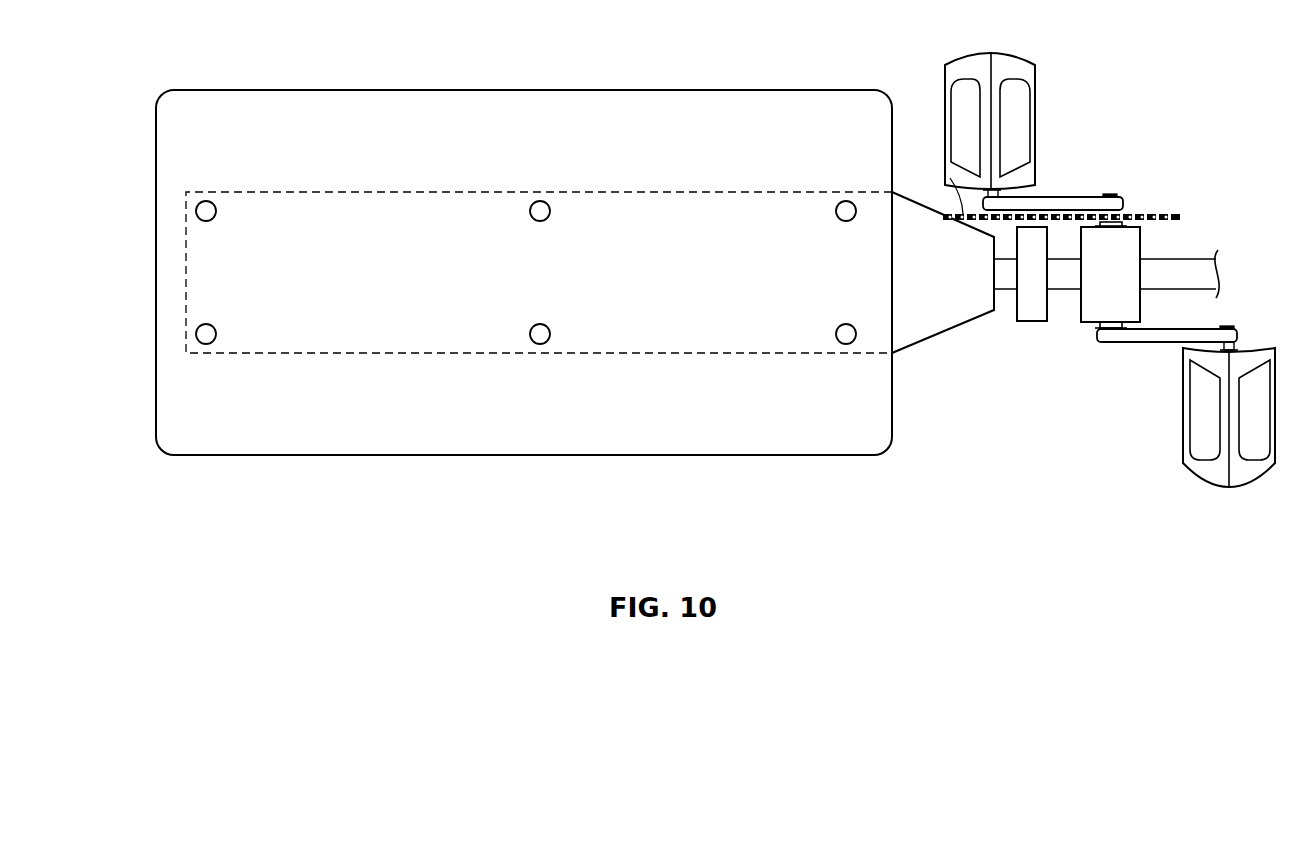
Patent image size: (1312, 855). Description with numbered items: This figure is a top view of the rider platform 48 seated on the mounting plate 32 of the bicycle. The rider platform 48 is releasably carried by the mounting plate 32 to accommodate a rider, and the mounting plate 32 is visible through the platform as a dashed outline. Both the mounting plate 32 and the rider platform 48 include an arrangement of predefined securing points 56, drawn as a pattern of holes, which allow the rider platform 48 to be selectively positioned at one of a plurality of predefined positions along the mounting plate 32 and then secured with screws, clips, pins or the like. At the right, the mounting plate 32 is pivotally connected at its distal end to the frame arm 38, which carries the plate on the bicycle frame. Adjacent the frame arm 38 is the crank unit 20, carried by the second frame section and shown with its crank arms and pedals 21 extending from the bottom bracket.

The rider platform 48 is at (627, 115).
The predefined securing points 56 is at (539, 200).
The mounting plate 32 is at (769, 332).
The frame arm 38 is at (947, 307).
The pedal 21 is at (955, 180).
The crank unit 20 is at (1117, 188).